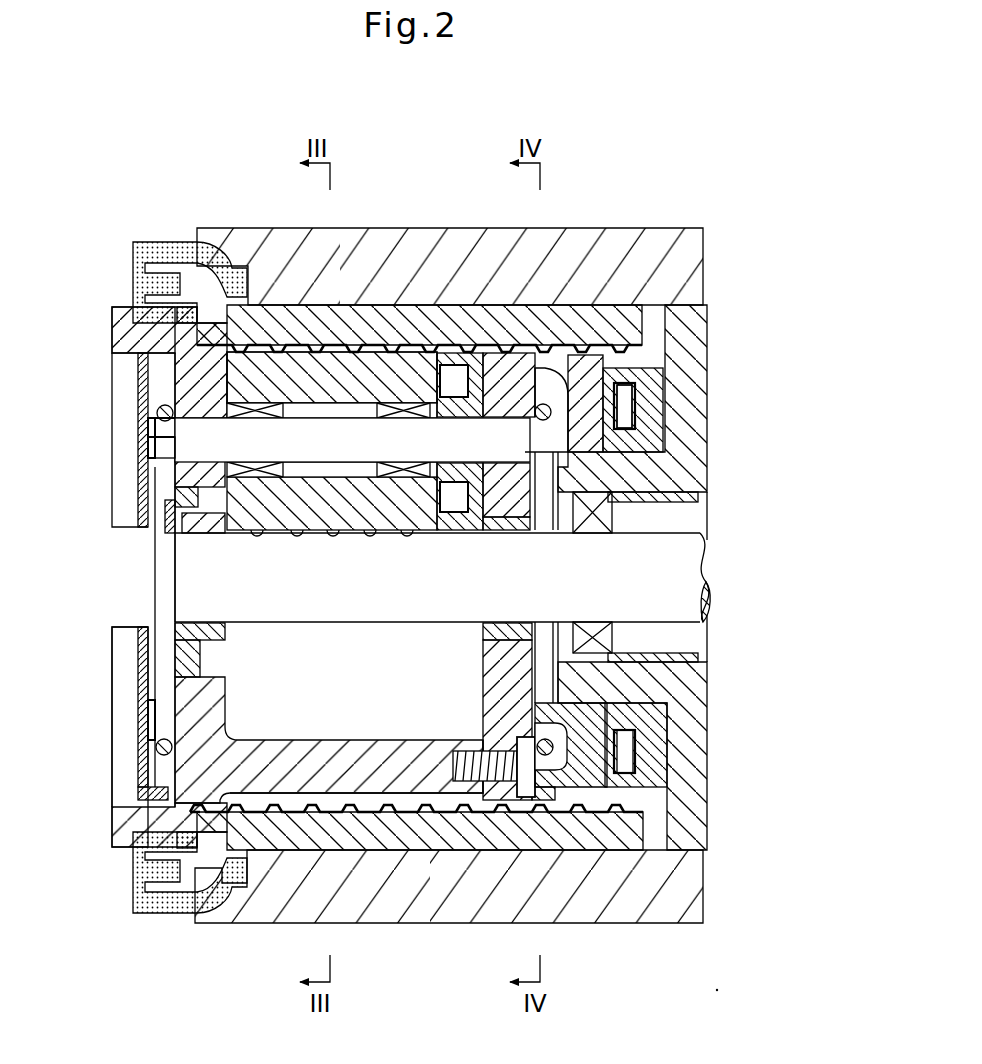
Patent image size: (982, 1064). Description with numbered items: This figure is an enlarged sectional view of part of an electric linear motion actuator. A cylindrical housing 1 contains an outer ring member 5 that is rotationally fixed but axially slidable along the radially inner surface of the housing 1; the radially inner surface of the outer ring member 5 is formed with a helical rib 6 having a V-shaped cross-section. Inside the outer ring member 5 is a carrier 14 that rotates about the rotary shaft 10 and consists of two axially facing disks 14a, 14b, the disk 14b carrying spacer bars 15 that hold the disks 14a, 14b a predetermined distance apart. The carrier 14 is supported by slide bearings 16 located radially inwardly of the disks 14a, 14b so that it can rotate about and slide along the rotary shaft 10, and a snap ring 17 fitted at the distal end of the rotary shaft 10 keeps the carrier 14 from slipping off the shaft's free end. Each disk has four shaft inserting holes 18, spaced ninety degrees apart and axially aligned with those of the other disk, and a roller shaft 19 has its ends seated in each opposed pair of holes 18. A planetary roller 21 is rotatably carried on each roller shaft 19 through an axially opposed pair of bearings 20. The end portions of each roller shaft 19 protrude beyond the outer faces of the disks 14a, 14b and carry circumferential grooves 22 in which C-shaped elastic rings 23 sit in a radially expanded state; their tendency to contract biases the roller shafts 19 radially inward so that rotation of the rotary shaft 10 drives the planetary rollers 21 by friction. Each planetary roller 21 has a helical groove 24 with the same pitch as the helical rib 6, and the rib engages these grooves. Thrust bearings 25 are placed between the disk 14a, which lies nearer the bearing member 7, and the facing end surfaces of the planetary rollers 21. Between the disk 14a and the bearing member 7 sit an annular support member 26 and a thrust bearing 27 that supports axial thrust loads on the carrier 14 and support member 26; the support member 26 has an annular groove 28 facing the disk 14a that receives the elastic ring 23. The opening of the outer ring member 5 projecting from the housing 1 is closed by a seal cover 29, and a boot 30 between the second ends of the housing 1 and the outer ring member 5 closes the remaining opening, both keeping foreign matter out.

The housing 1 is at (215, 228).
The outer ring member 5 is at (374, 346).
The helical rib 6 is at (420, 360).
The bearing member 7 is at (688, 318).
The rotary shaft 10 is at (356, 608).
The carrier 14 is at (170, 378).
The disk 14a is at (510, 365).
The disk 14b is at (135, 303).
The spacer bars 15 is at (335, 778).
The slide bearings 16 is at (218, 637).
The snap ring 17 is at (168, 633).
The shaft inserting holes 18 is at (145, 432).
The roller shaft 19 is at (300, 430).
The bearings 20 is at (257, 478).
The planetary roller 21 is at (352, 328).
The circumferential grooves 22 is at (162, 448).
The elastic rings 23 is at (549, 405).
The helical groove 24 is at (400, 352).
The thrust bearings 25 is at (455, 366).
The annular support member 26 is at (624, 390).
The thrust bearing 27 is at (630, 418).
The annular groove 28 is at (560, 750).
The seal cover 29 is at (140, 697).
The boot 30 is at (160, 242).